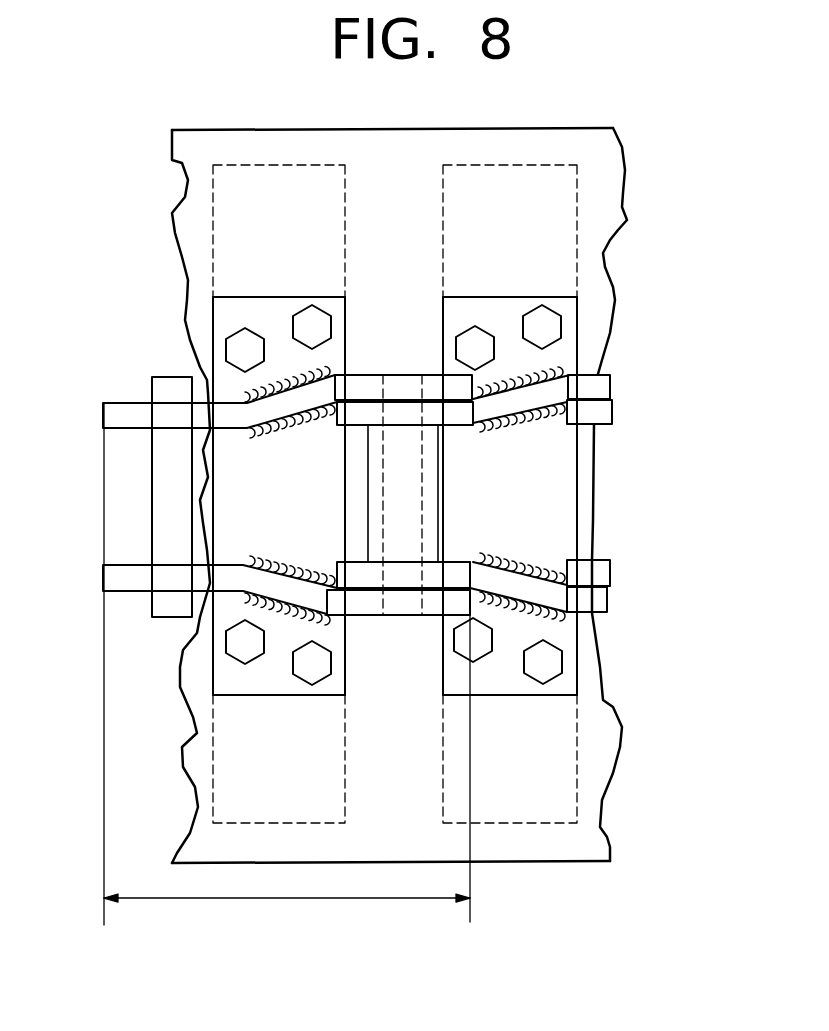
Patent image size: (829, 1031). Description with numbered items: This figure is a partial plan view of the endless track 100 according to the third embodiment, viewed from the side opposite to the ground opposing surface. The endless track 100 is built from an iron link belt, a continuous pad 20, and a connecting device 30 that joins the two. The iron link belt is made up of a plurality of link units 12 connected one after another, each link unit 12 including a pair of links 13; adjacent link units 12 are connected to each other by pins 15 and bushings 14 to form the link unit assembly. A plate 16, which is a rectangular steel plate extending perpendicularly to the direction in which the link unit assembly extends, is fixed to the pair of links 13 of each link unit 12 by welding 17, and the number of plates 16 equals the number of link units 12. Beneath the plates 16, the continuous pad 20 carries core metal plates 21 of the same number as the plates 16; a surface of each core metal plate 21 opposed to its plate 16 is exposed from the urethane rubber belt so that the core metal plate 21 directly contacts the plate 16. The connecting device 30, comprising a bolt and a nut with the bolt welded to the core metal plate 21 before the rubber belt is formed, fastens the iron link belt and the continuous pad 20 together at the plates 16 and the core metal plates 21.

The endless track 100 is at (523, 127).
The continuous pad 20 is at (603, 213).
The core metal plate 21 is at (223, 197).
The plate 16 is at (237, 313).
The connecting device 30 is at (307, 323).
The welding 17 is at (327, 365).
The link 13 is at (117, 406).
The bushing 14 is at (367, 515).
The pin 15 is at (173, 531).
The link unit 12 is at (233, 899).